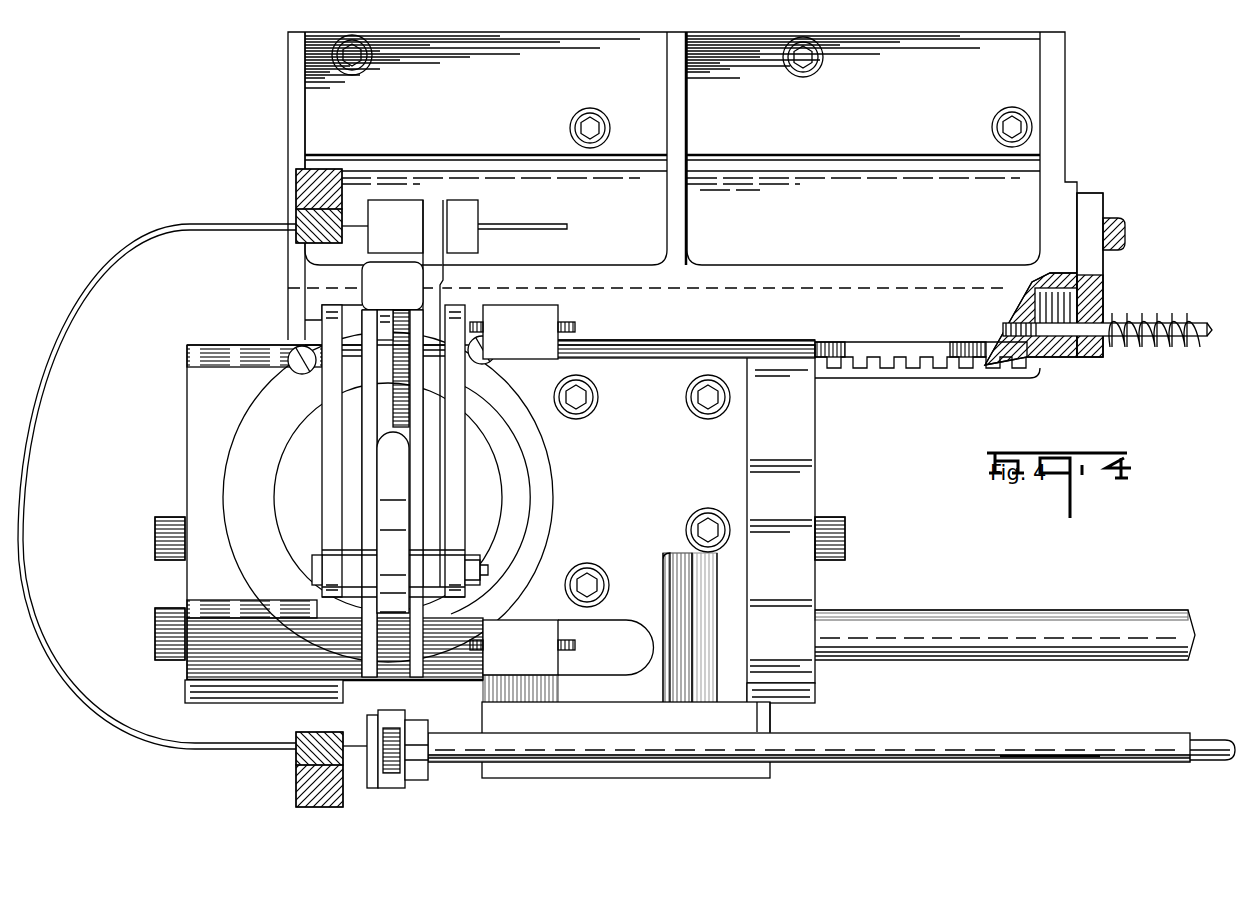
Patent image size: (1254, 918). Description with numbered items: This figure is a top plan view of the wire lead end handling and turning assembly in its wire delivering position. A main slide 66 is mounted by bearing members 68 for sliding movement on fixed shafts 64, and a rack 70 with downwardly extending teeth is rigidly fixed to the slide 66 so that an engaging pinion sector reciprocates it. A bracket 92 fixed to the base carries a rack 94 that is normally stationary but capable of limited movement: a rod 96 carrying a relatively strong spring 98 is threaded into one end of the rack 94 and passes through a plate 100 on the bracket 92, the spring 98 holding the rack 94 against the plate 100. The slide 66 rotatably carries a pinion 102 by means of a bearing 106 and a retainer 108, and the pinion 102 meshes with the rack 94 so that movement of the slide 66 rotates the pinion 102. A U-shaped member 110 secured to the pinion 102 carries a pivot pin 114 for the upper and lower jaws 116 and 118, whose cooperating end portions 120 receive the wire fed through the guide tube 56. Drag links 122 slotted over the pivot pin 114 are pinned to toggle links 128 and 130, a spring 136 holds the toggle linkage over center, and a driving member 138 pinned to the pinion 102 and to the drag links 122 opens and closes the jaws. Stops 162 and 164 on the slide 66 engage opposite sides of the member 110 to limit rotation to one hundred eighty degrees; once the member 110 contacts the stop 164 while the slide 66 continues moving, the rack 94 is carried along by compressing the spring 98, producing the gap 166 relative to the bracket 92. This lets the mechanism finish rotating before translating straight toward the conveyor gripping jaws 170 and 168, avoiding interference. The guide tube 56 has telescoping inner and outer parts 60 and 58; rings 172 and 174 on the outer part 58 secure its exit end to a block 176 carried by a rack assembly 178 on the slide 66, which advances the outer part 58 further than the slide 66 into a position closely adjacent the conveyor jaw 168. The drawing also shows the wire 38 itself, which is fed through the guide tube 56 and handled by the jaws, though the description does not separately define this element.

The bracket 92 is at (1062, 105).
The gripping jaw 170 is at (296, 183).
The cooperating end portions 120 is at (396, 212).
The cable 38 is at (540, 225).
The toggle link 128 is at (392, 469).
The toggle link 130 is at (405, 292).
The lower jaw 118 is at (322, 315).
The spring 136 is at (292, 350).
The stop 164 is at (535, 342).
The plate 100 is at (1100, 262).
The rod 96 is at (1162, 325).
The spring 98 is at (1168, 345).
The gap 166 is at (1055, 365).
The rack 94 is at (897, 370).
The retainer 108 is at (262, 406).
The U-shaped member 110 is at (328, 390).
The bearing 106 is at (300, 443).
The pinion 102 is at (485, 440).
The main slide 66 is at (806, 435).
The driving member 138 is at (392, 510).
The rack 70 is at (155, 534).
The drag links 122 is at (375, 525).
The upper jaw 116 is at (480, 512).
The pivot pin 114 is at (488, 568).
The shaft 64 is at (1075, 618).
The stop 162 is at (531, 656).
The bearing member 68 is at (245, 705).
The outer part of guide tube 58 is at (918, 733).
The inner part of guide tube 60 is at (1208, 742).
The block 176 is at (393, 710).
The ring 174 is at (422, 780).
The ring 172 is at (370, 788).
The gripping jaw 168 is at (296, 785).
The rack assembly 178 is at (675, 780).
The guide tube 56 is at (985, 770).